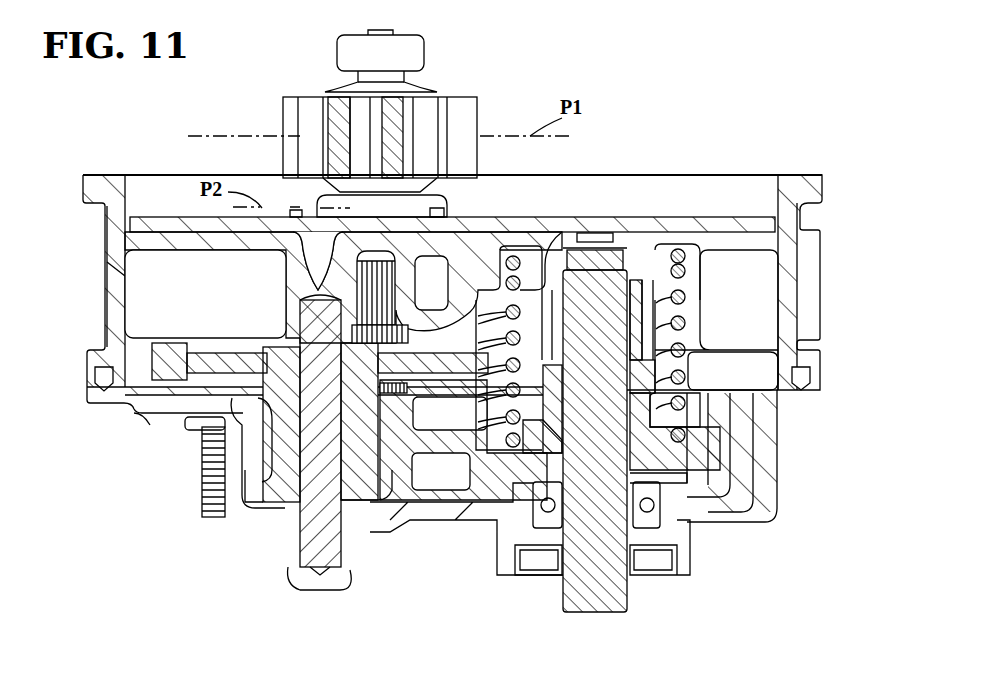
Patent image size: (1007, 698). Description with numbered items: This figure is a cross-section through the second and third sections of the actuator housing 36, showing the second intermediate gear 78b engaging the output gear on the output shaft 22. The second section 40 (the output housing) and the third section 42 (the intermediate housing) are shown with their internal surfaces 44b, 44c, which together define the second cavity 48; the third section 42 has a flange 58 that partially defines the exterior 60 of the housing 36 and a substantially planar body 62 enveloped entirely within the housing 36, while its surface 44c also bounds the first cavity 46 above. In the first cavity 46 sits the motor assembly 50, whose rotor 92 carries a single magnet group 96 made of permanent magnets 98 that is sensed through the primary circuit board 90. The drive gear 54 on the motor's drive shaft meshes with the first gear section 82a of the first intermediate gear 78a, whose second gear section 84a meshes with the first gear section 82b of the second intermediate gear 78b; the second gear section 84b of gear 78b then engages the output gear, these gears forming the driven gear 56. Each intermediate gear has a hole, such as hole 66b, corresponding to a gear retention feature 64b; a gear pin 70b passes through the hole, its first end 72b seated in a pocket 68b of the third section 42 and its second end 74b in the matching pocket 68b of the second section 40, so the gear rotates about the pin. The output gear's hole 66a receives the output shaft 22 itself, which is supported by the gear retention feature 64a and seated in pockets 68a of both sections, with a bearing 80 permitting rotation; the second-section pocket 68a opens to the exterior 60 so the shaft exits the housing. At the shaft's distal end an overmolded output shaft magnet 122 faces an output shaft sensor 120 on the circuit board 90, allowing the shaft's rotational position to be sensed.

The output shaft 22 is at (633, 381).
The housing 36 is at (459, 337).
The second section 40 is at (150, 413).
The third section 42 is at (113, 237).
The internal surface 44b is at (248, 505).
The internal surface 44c is at (125, 188).
The first cavity 46 is at (712, 200).
The second cavity 48 is at (720, 408).
The motor assembly 50 is at (400, 119).
The drive gear 54 is at (400, 295).
The driven gear 56 is at (200, 480).
The flange 58 is at (113, 275).
The exterior 60 is at (805, 282).
The body 62 is at (222, 248).
The gear retention feature 64a is at (648, 230).
The gear retention feature 64b is at (333, 232).
The hole 66a is at (760, 500).
The hole 66b is at (285, 505).
The pocket 68a is at (548, 240).
The pocket 68b is at (314, 325).
The gear pin 70b is at (262, 352).
The first end 72b is at (300, 325).
The second end 74b is at (285, 600).
The first intermediate gear 78a is at (478, 345).
The second intermediate gear 78b is at (200, 432).
The bearing 80 is at (660, 510).
The first gear section 82a is at (200, 236).
The first gear section 82b is at (160, 330).
The second gear section 84a is at (410, 395).
The second gear section 84b is at (364, 505).
The primary circuit board 90 is at (745, 225).
The rotor 92 is at (400, 125).
The single magnet group 96 is at (270, 97).
The permanent magnet 98 is at (470, 125).
The output shaft sensor 120 is at (592, 233).
The output shaft magnet 122 is at (690, 265).